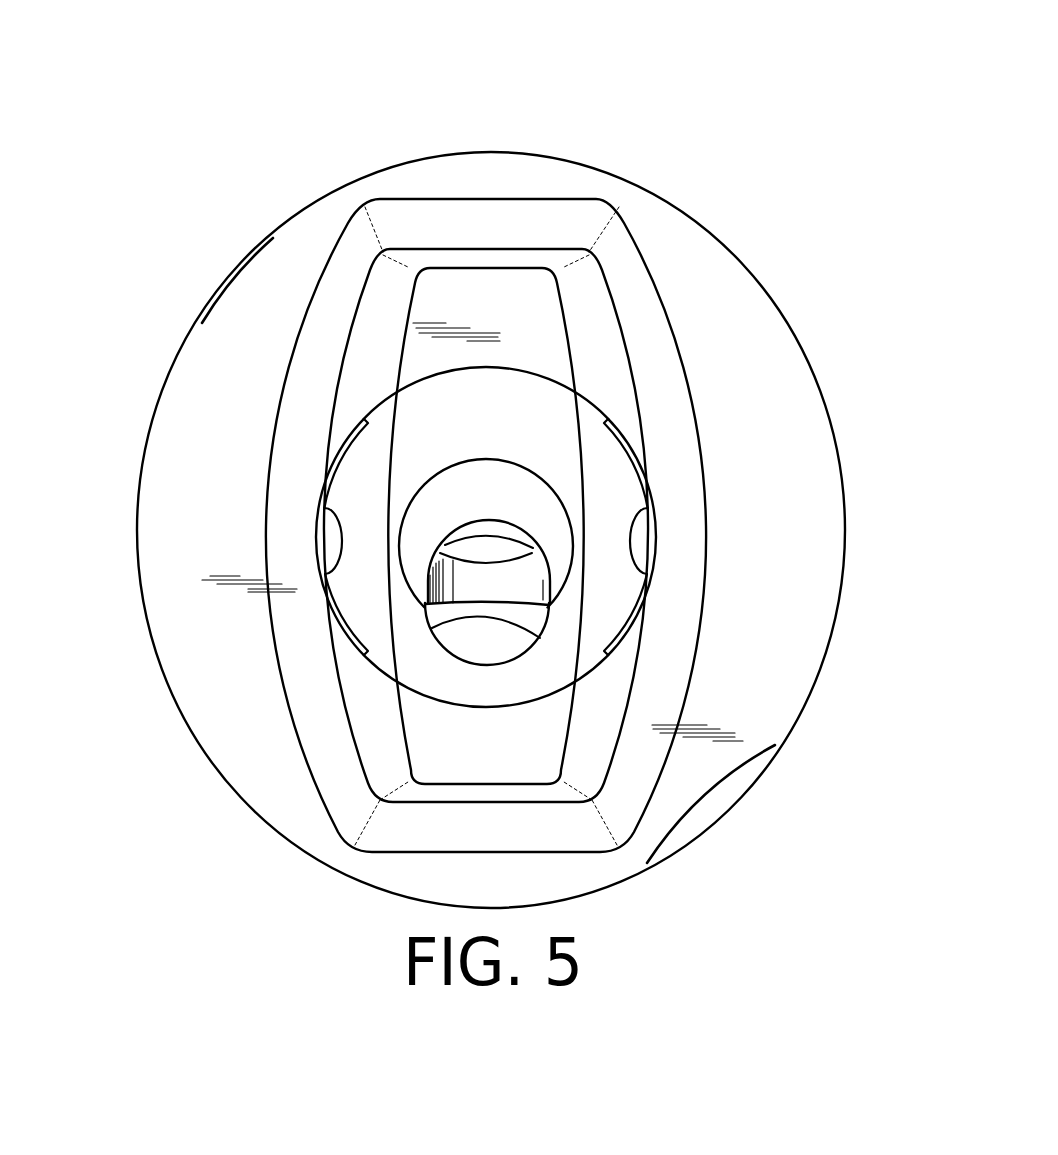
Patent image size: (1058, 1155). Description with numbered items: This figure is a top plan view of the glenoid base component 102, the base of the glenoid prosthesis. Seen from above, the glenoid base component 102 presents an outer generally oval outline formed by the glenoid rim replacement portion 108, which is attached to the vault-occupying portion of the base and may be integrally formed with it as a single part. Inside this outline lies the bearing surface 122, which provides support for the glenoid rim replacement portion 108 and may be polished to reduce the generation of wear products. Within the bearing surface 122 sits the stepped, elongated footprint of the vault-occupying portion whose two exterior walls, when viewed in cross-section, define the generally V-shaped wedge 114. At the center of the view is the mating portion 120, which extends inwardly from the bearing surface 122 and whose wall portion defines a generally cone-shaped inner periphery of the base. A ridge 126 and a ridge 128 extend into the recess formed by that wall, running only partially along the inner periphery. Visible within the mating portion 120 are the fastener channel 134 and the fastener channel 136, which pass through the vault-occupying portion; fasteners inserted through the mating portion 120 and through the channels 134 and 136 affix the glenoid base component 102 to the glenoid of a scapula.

The glenoid base component 102 is at (780, 197).
The glenoid rim replacement portion 108 is at (640, 181).
The generally V-shaped wedge 114 is at (333, 248).
The mating portion 120 is at (520, 423).
The bearing surface 122 is at (450, 182).
The ridge 126 is at (428, 603).
The ridge 128 is at (632, 558).
The fastener channel 134 is at (433, 557).
The fastener channel 136 is at (458, 654).